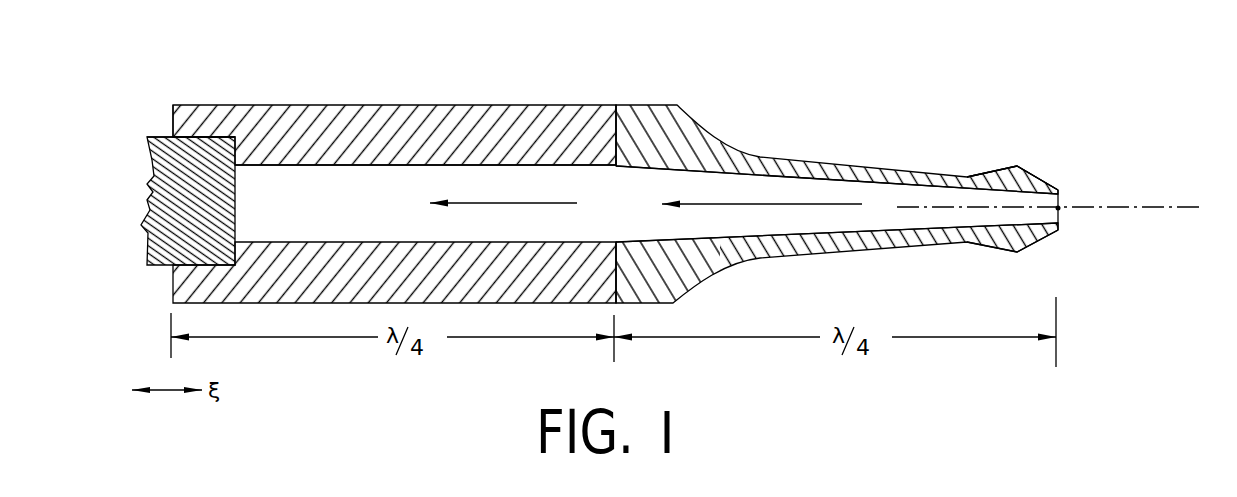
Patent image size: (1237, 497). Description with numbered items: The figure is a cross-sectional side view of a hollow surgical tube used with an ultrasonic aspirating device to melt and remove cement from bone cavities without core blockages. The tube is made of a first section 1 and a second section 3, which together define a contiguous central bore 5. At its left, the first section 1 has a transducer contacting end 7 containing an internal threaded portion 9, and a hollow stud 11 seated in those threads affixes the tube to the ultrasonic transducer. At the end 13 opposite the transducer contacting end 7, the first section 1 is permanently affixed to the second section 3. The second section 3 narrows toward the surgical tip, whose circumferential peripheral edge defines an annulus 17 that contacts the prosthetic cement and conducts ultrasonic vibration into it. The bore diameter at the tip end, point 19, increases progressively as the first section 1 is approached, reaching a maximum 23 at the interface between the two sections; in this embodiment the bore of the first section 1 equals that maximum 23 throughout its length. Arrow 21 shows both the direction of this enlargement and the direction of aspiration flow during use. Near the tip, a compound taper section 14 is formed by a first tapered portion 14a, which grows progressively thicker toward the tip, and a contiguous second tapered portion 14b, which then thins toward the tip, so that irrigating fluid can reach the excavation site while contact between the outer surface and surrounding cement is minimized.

The first section 1 is at (329, 105).
The second section 3 is at (742, 155).
The central bore 5 is at (637, 203).
The transducer contacting end 7 is at (173, 120).
The internal threaded portion 9 is at (200, 137).
The hollow stud 11 is at (148, 157).
The end opposite to the transducer contacting end 13 is at (616, 105).
The compound taper section 14 is at (1017, 166).
The first tapered portion 14a is at (993, 175).
The second tapered portion 14b is at (1040, 182).
The annulus 17 is at (1058, 190).
The point proximate the tip end 19 is at (1058, 208).
The arrow 21 is at (782, 205).
The maximum diameter 23 is at (622, 183).